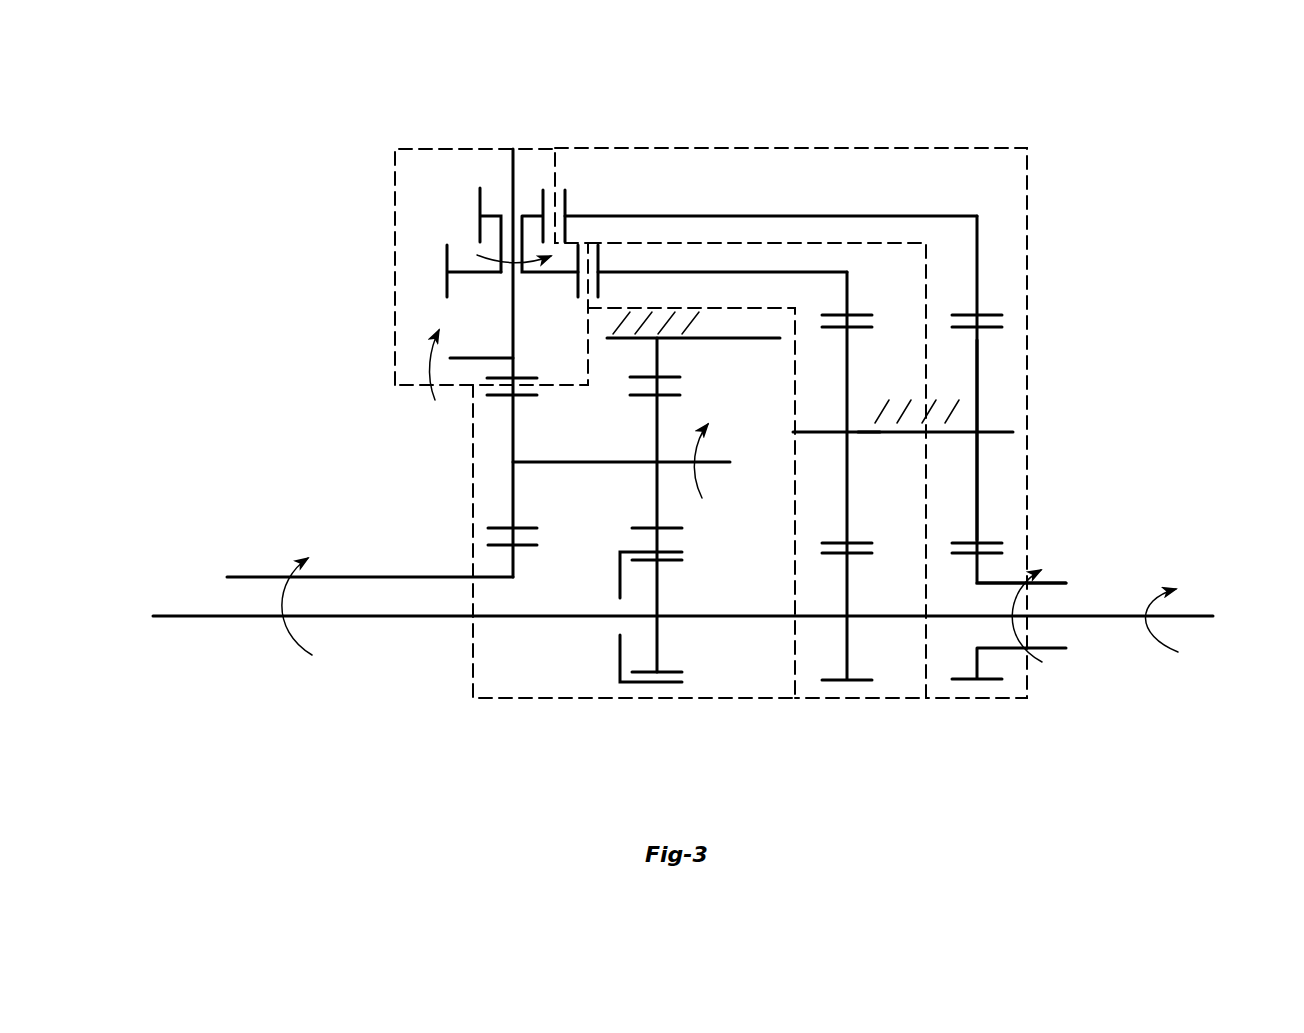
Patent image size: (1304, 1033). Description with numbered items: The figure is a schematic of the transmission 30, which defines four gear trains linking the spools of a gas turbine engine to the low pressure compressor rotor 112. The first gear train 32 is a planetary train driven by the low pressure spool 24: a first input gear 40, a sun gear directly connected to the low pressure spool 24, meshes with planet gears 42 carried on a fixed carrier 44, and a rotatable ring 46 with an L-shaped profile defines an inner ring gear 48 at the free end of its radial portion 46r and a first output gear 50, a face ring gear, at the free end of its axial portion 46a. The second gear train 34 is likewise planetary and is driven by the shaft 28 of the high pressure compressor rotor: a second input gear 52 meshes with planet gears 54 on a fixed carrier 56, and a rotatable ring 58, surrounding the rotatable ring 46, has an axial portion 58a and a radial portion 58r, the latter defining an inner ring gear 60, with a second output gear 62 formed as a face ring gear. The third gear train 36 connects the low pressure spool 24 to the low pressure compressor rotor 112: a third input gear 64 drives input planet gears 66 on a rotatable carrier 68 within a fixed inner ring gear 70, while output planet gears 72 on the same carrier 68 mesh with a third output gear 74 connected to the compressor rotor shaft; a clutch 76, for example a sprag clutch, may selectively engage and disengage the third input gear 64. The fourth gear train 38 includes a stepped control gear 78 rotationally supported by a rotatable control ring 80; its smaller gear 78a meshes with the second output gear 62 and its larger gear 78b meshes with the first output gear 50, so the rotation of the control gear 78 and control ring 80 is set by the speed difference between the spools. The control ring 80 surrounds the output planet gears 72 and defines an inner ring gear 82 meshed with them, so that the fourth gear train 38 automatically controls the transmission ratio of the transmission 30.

The low pressure spool 24 is at (1195, 616).
The shaft of the high pressure compressor rotor 28 is at (1048, 583).
The transmission 30 is at (303, 103).
The first gear train 32 is at (892, 700).
The second gear train 34 is at (980, 128).
The third gear train 36 is at (600, 698).
The fourth gear train 38 is at (420, 148).
The first input gear 40 is at (830, 690).
The planet gears 42 is at (848, 373).
The fixed carrier 44 is at (858, 430).
The rotatable ring 46 is at (722, 256).
The axial portion 46a is at (648, 272).
The radial portion 46r is at (845, 290).
The inner ring gear 48 is at (860, 315).
The first output gear 50 is at (603, 245).
The second input gear 52 is at (990, 680).
The planet gears 54 is at (978, 378).
The fixed carrier 56 is at (990, 432).
The rotatable ring 58 is at (836, 313).
The axial portion 58a is at (622, 216).
The radial portion 58r is at (980, 243).
The inner ring gear 60 is at (990, 312).
The second output gear 62 is at (565, 190).
The third input gear 64 is at (658, 638).
The input planet gears 66 is at (653, 497).
The rotatable carrier 68 is at (567, 462).
The fixed inner ring gear 70 is at (672, 378).
The output planet gears 72 is at (513, 488).
The third output gear 74 is at (500, 547).
The clutch 76 is at (647, 682).
The control gear 78 is at (424, 202).
The smaller gear 78a is at (480, 190).
The larger gear 78b is at (445, 282).
The control ring 80 is at (513, 322).
The inner ring gear 82 is at (500, 397).
The low pressure compressor rotor 112 is at (248, 577).